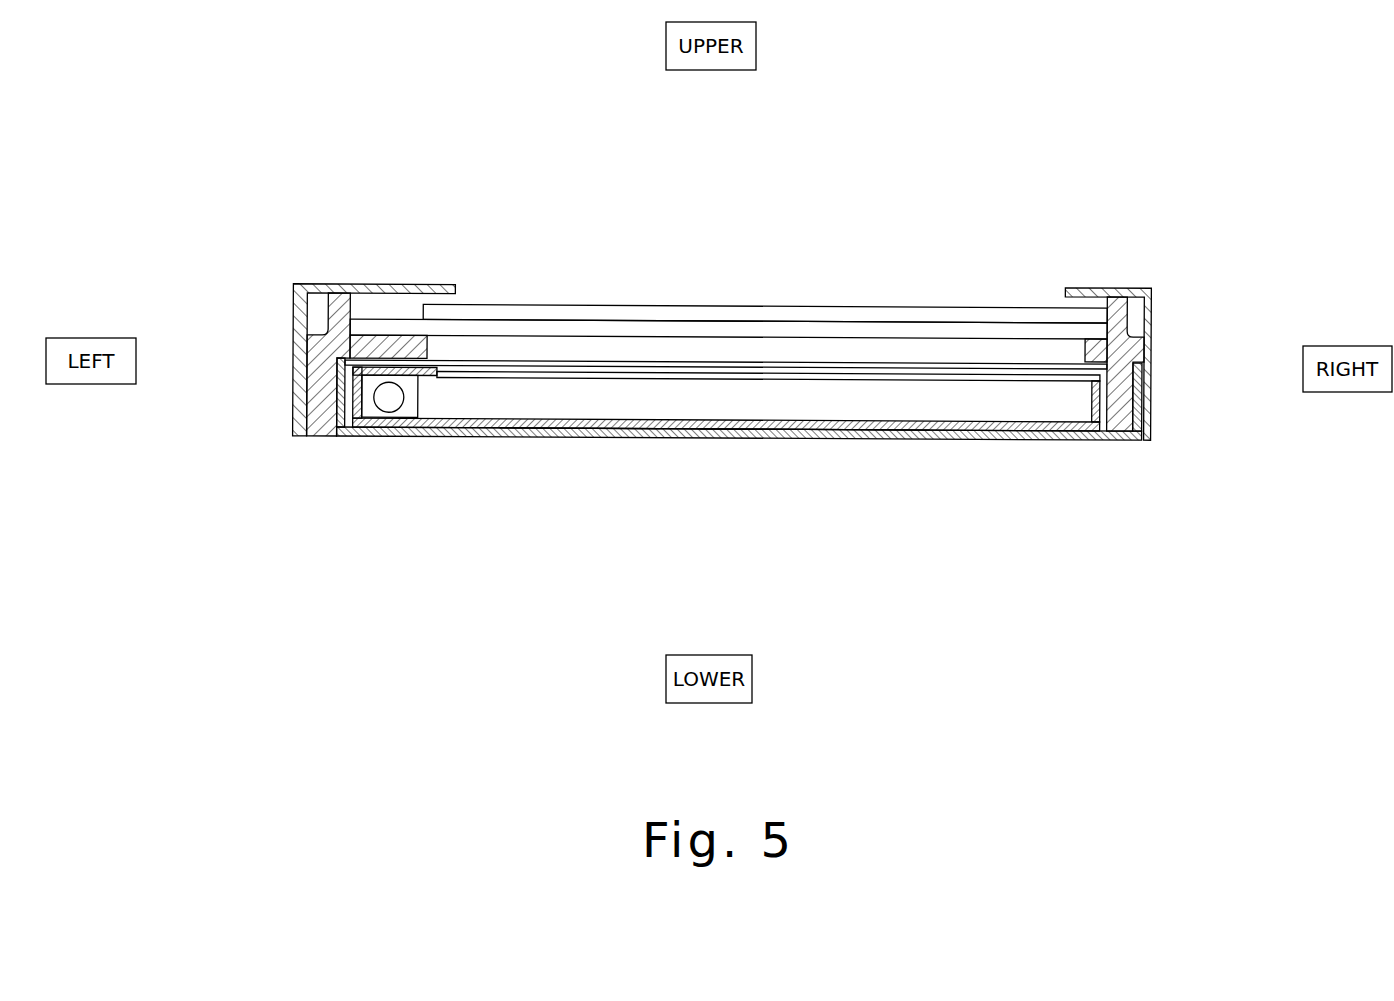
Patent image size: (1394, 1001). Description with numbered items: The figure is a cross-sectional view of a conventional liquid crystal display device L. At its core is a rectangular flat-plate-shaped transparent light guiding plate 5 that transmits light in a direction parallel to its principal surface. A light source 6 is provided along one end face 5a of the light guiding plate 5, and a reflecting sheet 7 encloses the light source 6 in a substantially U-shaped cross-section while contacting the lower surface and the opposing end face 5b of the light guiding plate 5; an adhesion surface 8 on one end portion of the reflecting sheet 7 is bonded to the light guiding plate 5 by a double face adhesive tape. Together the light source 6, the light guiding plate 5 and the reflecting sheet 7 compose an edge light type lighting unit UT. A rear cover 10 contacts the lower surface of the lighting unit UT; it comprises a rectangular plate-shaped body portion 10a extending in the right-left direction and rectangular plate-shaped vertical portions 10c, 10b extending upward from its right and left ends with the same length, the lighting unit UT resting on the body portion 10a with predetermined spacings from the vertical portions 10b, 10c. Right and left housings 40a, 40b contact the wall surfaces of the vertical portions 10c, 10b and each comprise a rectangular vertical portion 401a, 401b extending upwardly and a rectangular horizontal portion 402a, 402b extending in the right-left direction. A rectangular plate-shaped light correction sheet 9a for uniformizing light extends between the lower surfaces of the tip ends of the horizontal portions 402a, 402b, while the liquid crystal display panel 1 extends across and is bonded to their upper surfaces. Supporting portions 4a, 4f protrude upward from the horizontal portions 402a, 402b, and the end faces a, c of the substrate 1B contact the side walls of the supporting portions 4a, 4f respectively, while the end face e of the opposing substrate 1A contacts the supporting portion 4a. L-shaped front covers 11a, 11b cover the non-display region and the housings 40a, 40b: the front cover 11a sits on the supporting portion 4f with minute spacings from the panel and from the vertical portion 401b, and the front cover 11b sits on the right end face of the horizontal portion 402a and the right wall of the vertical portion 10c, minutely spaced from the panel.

The liquid crystal display panel 1 is at (729, 265).
The opposing substrate 1A is at (585, 314).
The substrate 1B is at (642, 331).
The supporting portion 4a is at (1133, 326).
The supporting portion 4f is at (325, 315).
The light guiding plate 5 is at (705, 403).
The end face 5a is at (420, 382).
The opposing end face 5b is at (1090, 404).
The light source 6 is at (388, 401).
The reflecting sheet 7 is at (583, 438).
The adhesion surface 8 is at (430, 381).
The light correction sheet 9a is at (932, 368).
The rear cover 10 is at (917, 446).
The body portion 10a is at (813, 435).
The vertical portion 10b is at (341, 438).
The vertical portion 10c is at (1138, 424).
The front cover 11a is at (296, 389).
The front cover 11b is at (1148, 392).
The right housing 40a is at (1112, 448).
The left housing 40b is at (320, 444).
The vertical portion 401a is at (1123, 418).
The vertical portion 401b is at (311, 438).
The horizontal portion 402a is at (1095, 349).
The horizontal portion 402b is at (378, 349).
The lighting unit UT is at (753, 394).
The liquid crystal display device L is at (1174, 211).
The end face a is at (1107, 330).
The end face e is at (1107, 314).
The end face c is at (352, 334).